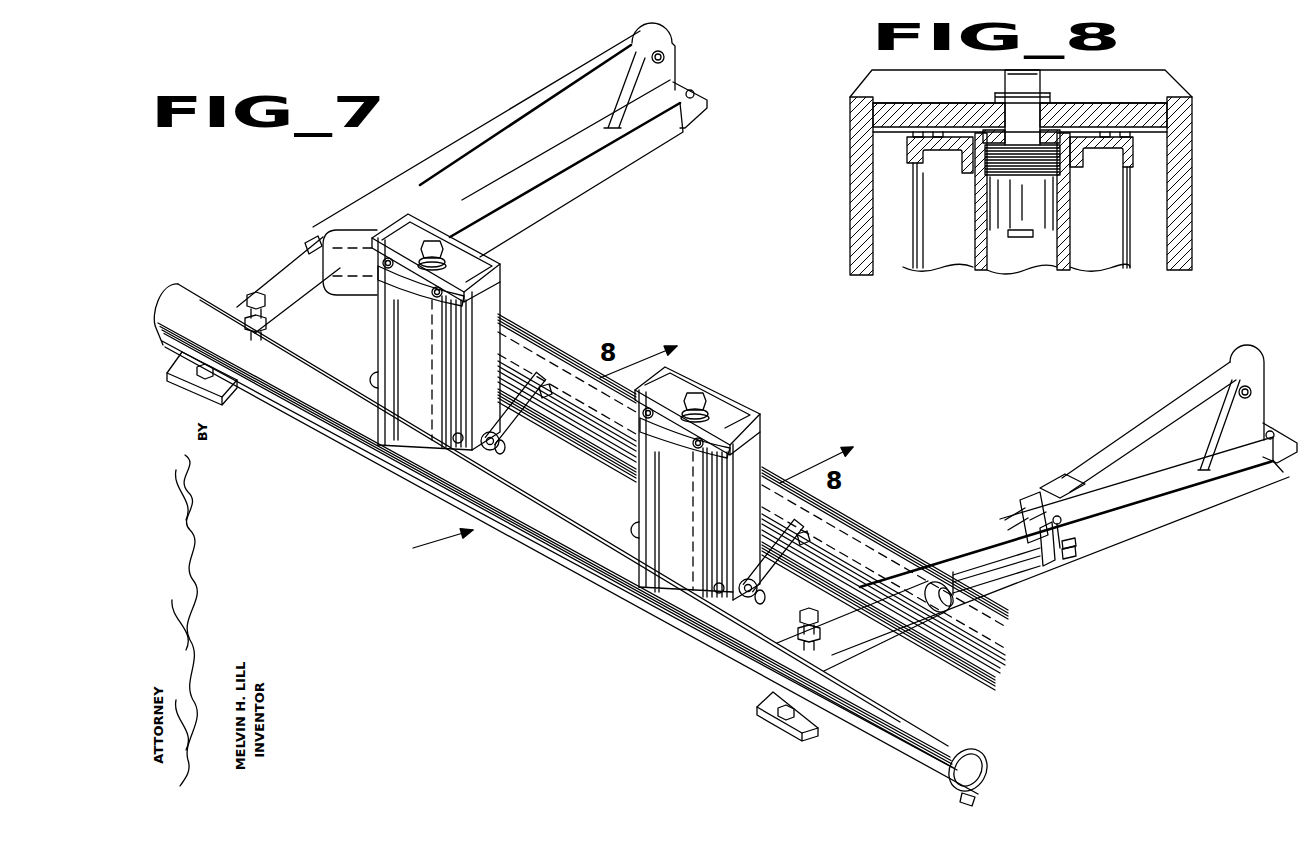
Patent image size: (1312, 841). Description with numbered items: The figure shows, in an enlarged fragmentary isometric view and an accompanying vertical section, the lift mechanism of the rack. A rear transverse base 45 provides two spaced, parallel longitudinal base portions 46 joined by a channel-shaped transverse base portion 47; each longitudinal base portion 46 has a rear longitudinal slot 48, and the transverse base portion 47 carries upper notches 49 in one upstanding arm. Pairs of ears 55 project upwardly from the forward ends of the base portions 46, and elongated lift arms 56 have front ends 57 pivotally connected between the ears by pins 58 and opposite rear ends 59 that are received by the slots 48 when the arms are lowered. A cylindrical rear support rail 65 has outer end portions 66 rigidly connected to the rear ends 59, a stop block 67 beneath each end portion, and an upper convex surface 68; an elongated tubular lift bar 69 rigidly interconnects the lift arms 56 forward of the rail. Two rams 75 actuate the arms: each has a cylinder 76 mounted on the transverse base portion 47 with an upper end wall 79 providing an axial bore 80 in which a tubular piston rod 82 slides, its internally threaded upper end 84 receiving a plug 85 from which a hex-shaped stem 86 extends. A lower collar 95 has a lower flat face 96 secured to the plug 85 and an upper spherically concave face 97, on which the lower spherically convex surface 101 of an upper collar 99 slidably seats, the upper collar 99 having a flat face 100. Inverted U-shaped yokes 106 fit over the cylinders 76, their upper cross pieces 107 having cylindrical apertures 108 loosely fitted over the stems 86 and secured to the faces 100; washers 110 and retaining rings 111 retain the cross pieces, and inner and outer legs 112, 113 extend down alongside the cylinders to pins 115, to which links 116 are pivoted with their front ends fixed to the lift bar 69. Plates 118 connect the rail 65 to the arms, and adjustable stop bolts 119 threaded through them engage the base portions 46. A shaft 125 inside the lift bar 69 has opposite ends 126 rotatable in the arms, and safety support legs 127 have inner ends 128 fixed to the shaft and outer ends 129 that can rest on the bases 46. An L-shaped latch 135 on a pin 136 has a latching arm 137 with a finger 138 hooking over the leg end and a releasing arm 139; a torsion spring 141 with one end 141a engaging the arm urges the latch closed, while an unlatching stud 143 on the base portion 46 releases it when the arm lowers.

In FIG. 7, the rear transverse base 45 is at (427, 544).
In FIG. 7, the longitudinal base portions 46 is at (565, 188).
In FIG. 7, the transverse base portion 47 is at (538, 496).
In FIG. 7, the rear longitudinal slot 48 is at (297, 307).
In FIG. 7, the upper notches 49 is at (547, 400).
In FIG. 7, the ears 55 is at (608, 128).
In FIG. 7, the lift arms 56 is at (513, 125).
In FIG. 7, the front ends 57 is at (664, 29).
In FIG. 7, the pins 58 is at (666, 56).
In FIG. 7, the rear ends 59 is at (215, 305).
In FIG. 7, the rear support rail 65 is at (518, 530).
In FIG. 7, the outer end portions 66 is at (166, 348).
In FIG. 7, the stop block 67 is at (982, 793).
In FIG. 7, the upper convex surface 68 is at (732, 634).
In FIG. 7, the lift bar 69 is at (523, 328).
In FIG. 7, the rams 75 is at (417, 400).
In FIG. 8, the rams 75 is at (1150, 100).
In FIG. 7, the cylinder 76 is at (402, 364).
In FIG. 8, the cylinder 76 is at (912, 268).
In FIG. 7, the upper end wall 79 is at (423, 297).
In FIG. 8, the upper end wall 79 is at (1120, 141).
In FIG. 8, the axial bore 80 is at (995, 104).
In FIG. 8, the piston rods 82 is at (977, 270).
In FIG. 8, the upper ends 84 is at (1010, 166).
In FIG. 8, the plugs 85 is at (1005, 180).
In FIG. 7, the stems 86 is at (436, 245).
In FIG. 8, the stems 86 is at (1008, 74).
In FIG. 8, the lower collar 95 is at (985, 150).
In FIG. 8, the lower flat face 96 is at (1060, 186).
In FIG. 8, the upper spherically concave face 97 is at (1043, 143).
In FIG. 8, the upper collar 99 is at (1047, 140).
In FIG. 8, the flat face 100 is at (1078, 130).
In FIG. 8, the lower spherically convex surface 101 is at (1060, 160).
In FIG. 7, the yokes 106 is at (500, 282).
In FIG. 8, the yokes 106 is at (850, 160).
In FIG. 7, the upper cross pieces 107 is at (413, 236).
In FIG. 8, the upper cross pieces 107 is at (880, 108).
In FIG. 8, the cylindrical apertures 108 is at (1036, 100).
In FIG. 7, the washers 110 is at (448, 266).
In FIG. 8, the washers 110 is at (998, 102).
In FIG. 7, the retaining rings 111 is at (448, 259).
In FIG. 8, the retaining rings 111 is at (1000, 94).
In FIG. 7, the inner legs 112 is at (500, 303).
In FIG. 8, the inner legs 112 is at (855, 172).
In FIG. 7, the outer legs 113 is at (378, 332).
In FIG. 8, the outer legs 113 is at (1190, 150).
In FIG. 7, the pins 115 is at (473, 457).
In FIG. 7, the links 116 is at (368, 377).
In FIG. 7, the plates 118 is at (290, 336).
In FIG. 7, the adjustable stop bolts 119 is at (256, 294).
In FIG. 7, the shaft 125 is at (551, 355).
In FIG. 7, the opposite ends 126 is at (318, 238).
In FIG. 7, the safety support legs 127 is at (330, 240).
In FIG. 7, the inner ends 128 is at (310, 248).
In FIG. 7, the outer ends 129 is at (1037, 548).
In FIG. 7, the latch 135 is at (1033, 503).
In FIG. 7, the pin 136 is at (1062, 522).
In FIG. 7, the latching arm 137 is at (1054, 547).
In FIG. 7, the finger 138 is at (1034, 548).
In FIG. 7, the releasing arm 139 is at (1080, 478).
In FIG. 7, the torsion spring 141 is at (1018, 499).
In FIG. 7, the end 141a is at (1037, 527).
In FIG. 7, the unlatching stud 143 is at (1068, 533).